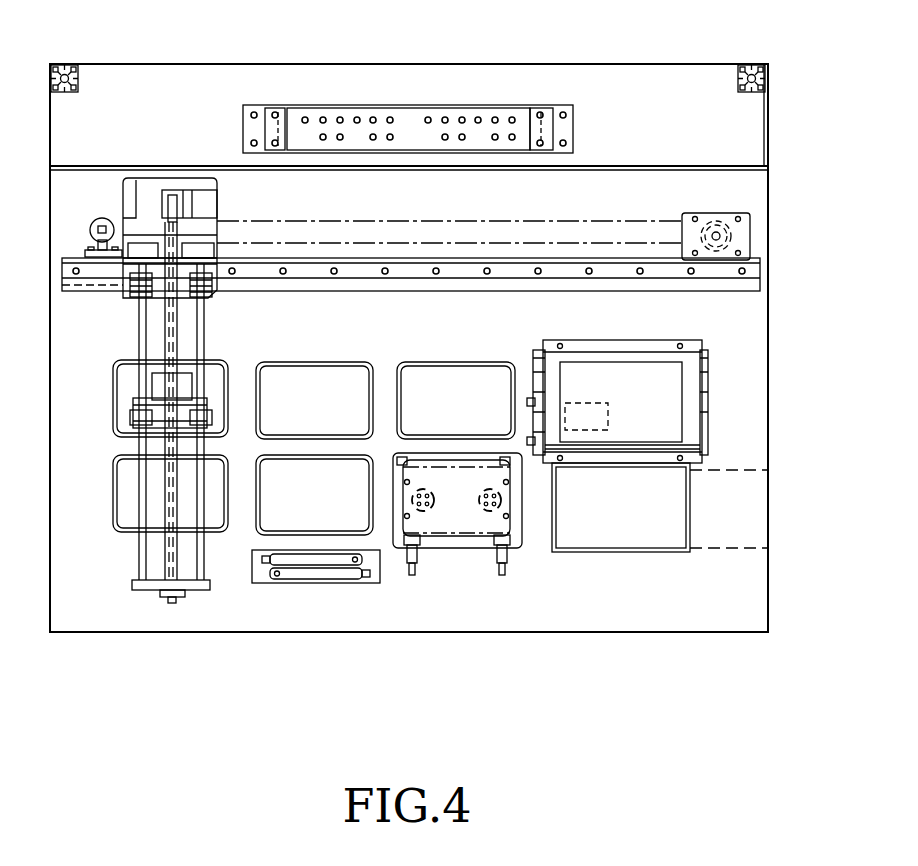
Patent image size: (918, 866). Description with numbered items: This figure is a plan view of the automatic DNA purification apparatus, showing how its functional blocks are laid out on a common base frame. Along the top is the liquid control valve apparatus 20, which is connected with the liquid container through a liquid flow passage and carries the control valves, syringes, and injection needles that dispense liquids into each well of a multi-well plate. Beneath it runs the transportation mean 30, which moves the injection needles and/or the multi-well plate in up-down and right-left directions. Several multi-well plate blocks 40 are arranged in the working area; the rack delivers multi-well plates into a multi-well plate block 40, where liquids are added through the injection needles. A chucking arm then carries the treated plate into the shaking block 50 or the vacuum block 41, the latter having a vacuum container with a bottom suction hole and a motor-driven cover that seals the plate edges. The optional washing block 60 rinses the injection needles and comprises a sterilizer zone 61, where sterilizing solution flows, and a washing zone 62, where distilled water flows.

The liquid control valve apparatus 20 is at (513, 108).
The transportation mean 30 is at (145, 590).
The multi-well plate block 40 is at (297, 415).
The vacuum block 41 is at (693, 425).
The shaking block 50 is at (445, 536).
The washing block 60 is at (262, 583).
The sterilizer zone 61 is at (307, 556).
The washing zone 62 is at (345, 572).